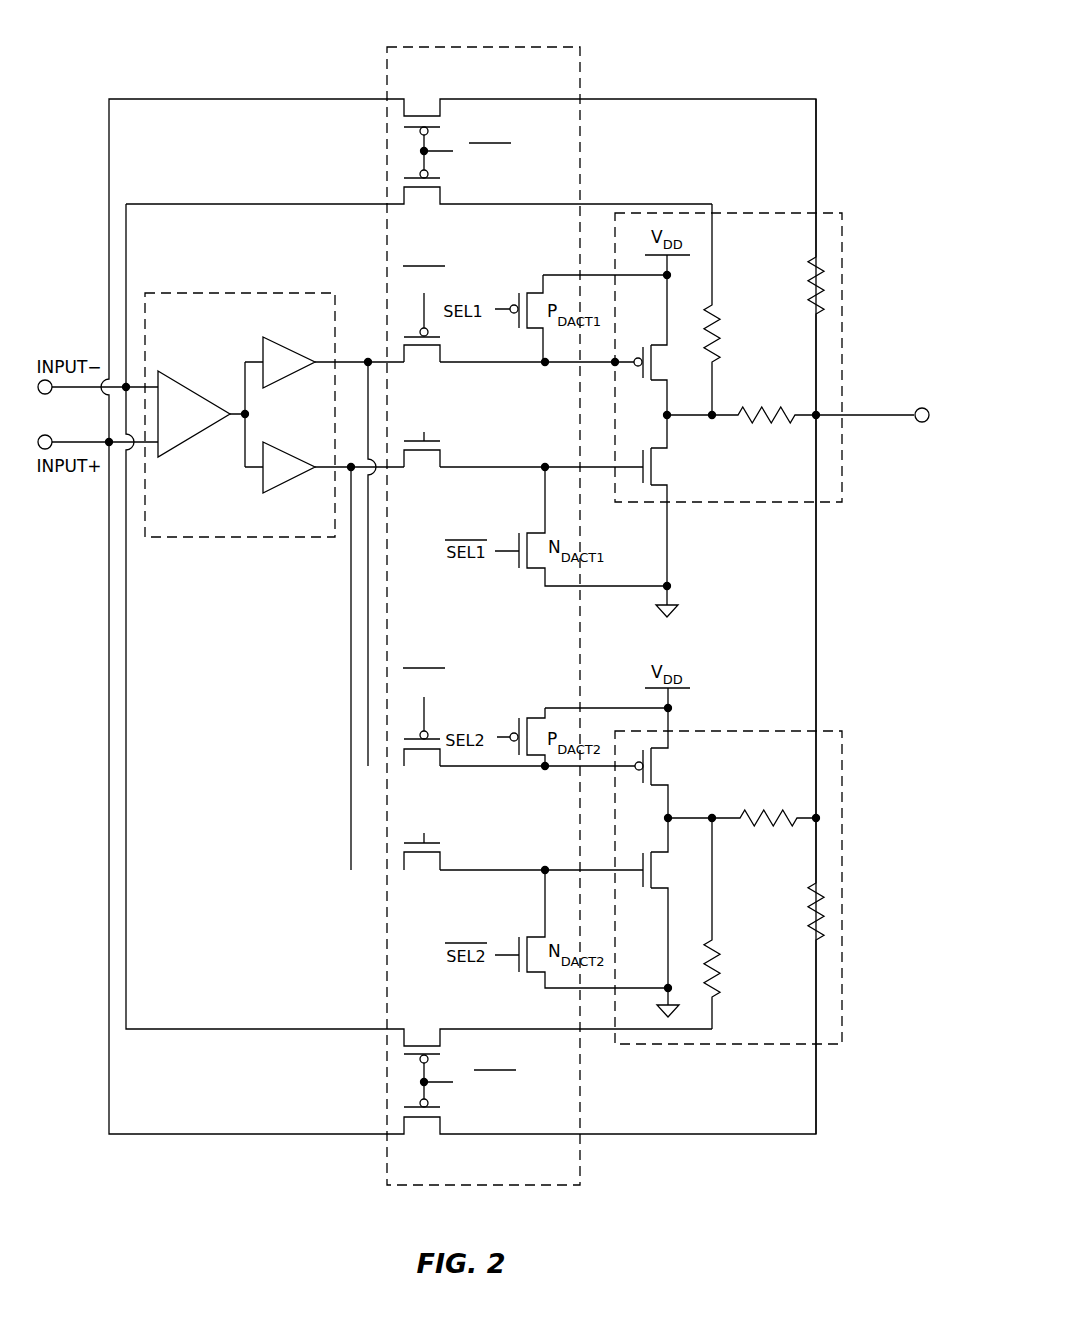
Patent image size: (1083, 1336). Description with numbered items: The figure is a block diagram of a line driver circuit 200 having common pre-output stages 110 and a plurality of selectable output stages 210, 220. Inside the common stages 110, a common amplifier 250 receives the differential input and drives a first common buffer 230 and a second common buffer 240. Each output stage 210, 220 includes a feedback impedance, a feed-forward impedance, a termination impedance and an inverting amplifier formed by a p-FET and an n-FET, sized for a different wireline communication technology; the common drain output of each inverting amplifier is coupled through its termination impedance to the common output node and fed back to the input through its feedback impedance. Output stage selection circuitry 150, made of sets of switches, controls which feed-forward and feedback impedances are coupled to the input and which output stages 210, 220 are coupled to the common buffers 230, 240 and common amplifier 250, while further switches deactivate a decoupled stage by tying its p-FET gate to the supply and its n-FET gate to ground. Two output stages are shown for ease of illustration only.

The line driver circuit 200 is at (733, 42).
The common pre-output stage 110 is at (240, 439).
The output stage selection circuitry 150 is at (387, 940).
The first output stage 210 is at (720, 503).
The second output stage 220 is at (722, 1045).
The first common buffer 230 is at (291, 344).
The second common buffer 240 is at (277, 485).
The common amplifier 250 is at (167, 426).